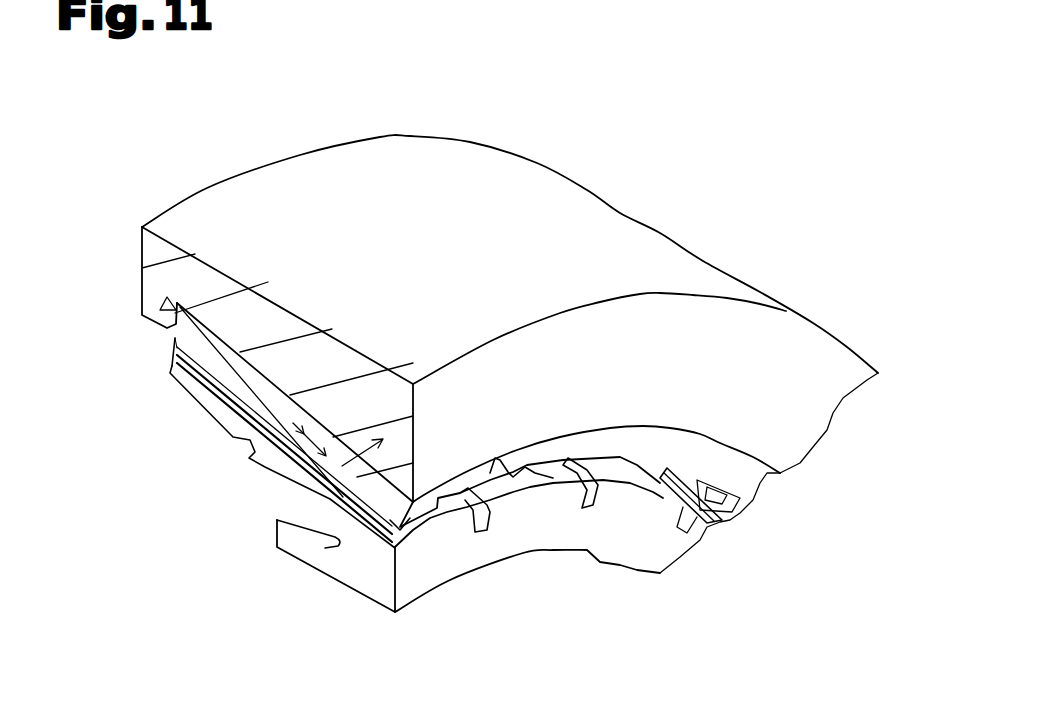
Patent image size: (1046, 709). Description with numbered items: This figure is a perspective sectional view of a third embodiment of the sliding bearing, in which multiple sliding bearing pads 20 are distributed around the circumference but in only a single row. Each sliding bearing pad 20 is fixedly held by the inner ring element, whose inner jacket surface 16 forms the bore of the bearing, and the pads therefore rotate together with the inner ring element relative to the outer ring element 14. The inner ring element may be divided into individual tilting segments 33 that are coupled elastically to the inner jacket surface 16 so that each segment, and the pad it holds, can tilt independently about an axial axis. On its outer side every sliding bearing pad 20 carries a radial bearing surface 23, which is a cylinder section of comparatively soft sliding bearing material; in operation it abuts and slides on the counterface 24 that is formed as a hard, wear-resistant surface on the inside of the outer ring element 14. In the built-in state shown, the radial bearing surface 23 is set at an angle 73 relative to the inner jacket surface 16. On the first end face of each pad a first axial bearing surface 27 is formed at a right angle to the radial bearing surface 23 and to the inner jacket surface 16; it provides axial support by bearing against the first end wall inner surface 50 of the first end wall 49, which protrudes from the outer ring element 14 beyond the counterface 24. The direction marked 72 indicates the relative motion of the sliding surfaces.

The outer ring element 14 is at (578, 243).
The inner jacket surface 16 is at (357, 593).
The sliding bearing pad 20 is at (177, 362).
The radial bearing surface 23 is at (260, 363).
The counterface 24 is at (205, 342).
The first axial bearing surface 27 is at (167, 300).
The tilting segment 33 is at (181, 388).
The first end wall 49 is at (167, 327).
The first end wall inner surface 50 is at (174, 382).
The movement direction arrow 72 is at (360, 380).
The angle 73 is at (348, 417).